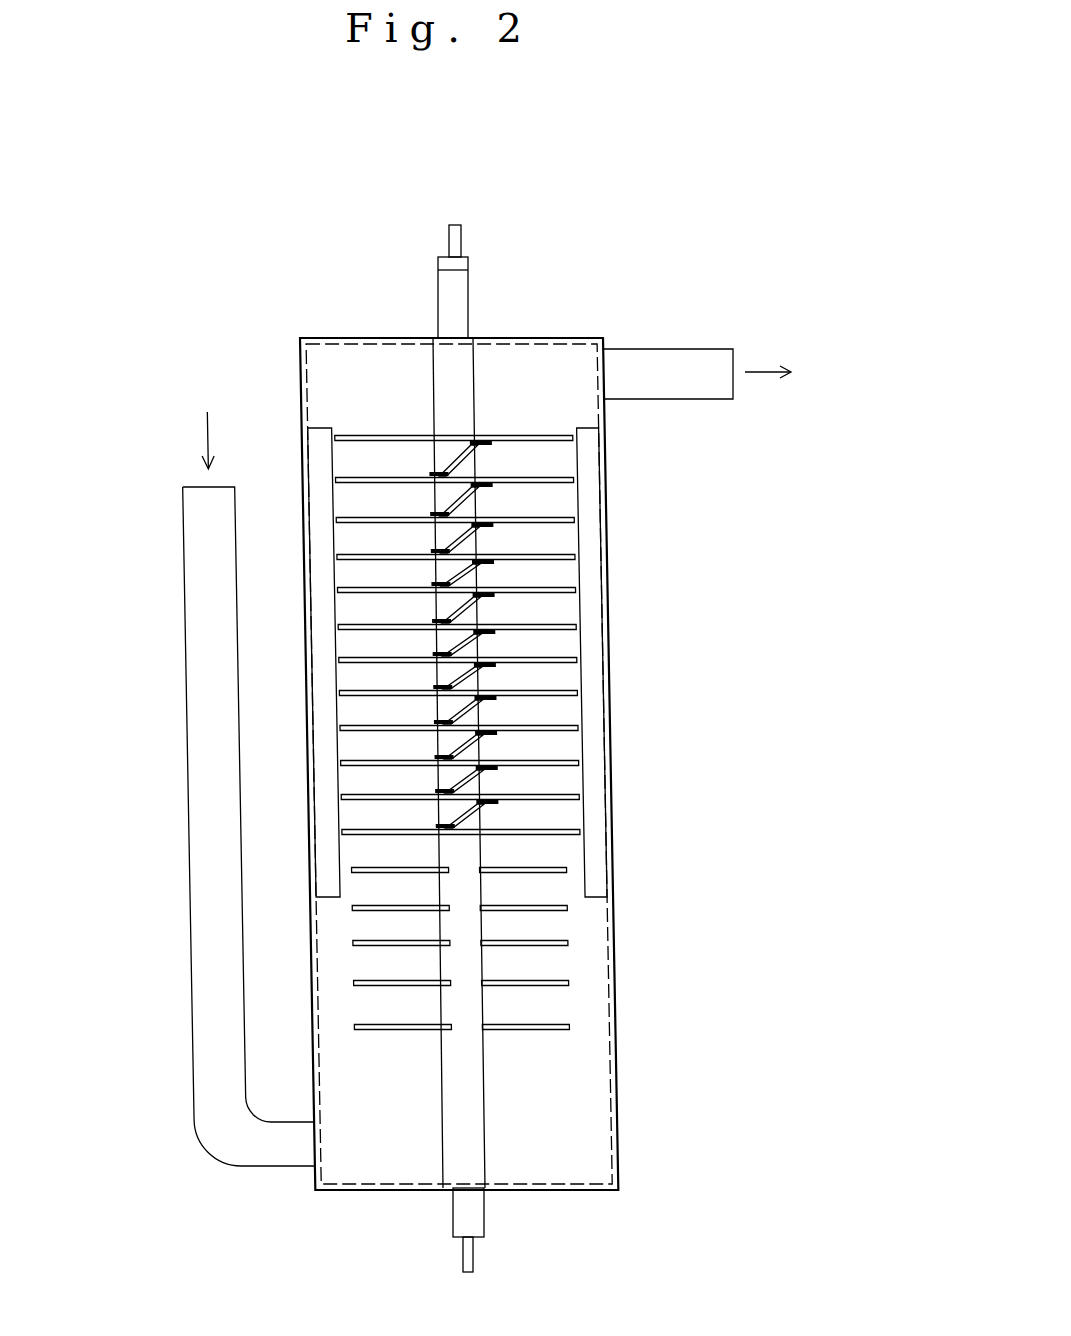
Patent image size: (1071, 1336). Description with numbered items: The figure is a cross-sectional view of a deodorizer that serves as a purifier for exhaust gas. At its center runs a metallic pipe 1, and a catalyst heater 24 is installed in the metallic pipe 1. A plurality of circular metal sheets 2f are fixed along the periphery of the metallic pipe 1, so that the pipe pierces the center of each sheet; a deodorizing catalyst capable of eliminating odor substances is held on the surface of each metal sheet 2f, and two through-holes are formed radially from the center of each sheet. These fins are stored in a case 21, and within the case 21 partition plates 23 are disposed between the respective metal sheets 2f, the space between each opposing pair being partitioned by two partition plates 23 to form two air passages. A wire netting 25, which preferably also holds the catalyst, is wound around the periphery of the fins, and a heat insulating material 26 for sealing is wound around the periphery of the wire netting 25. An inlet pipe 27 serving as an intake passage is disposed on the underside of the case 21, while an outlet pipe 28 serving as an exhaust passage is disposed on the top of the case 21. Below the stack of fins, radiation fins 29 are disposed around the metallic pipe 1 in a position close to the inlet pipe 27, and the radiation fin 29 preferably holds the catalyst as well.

The metallic pipe 1 is at (457, 392).
The metal sheet 2f is at (543, 593).
The case 21 is at (617, 1153).
The partition plate 23 is at (472, 458).
The catalyst heater 24 is at (458, 297).
The wire netting 25 is at (585, 750).
The heat insulating material 26 is at (595, 862).
The inlet pipe 27 is at (205, 1075).
The outlet pipe 28 is at (675, 365).
The radiation fin 29 is at (568, 985).